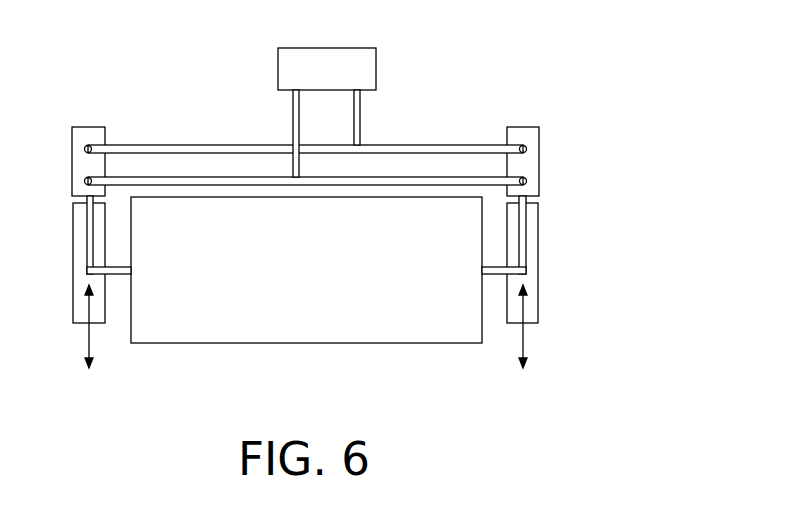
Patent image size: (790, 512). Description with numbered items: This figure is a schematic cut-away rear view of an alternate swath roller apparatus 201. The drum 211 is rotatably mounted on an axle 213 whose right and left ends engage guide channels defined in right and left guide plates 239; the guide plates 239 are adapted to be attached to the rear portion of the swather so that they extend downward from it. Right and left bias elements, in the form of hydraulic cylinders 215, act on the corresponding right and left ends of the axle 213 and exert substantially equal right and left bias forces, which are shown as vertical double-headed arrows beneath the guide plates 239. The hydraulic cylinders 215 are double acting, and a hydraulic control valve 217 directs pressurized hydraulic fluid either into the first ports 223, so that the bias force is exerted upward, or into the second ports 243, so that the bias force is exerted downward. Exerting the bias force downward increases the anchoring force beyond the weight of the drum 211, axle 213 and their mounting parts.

The swath roller apparatus 201 is at (392, 205).
The drum 211 is at (305, 343).
The axle 213 is at (118, 275).
The hydraulic cylinders 215 is at (540, 135).
The hydraulic control valve 217 is at (357, 48).
The first ports 223 is at (540, 181).
The guide plates 239 is at (540, 286).
The second ports 243 is at (525, 144).